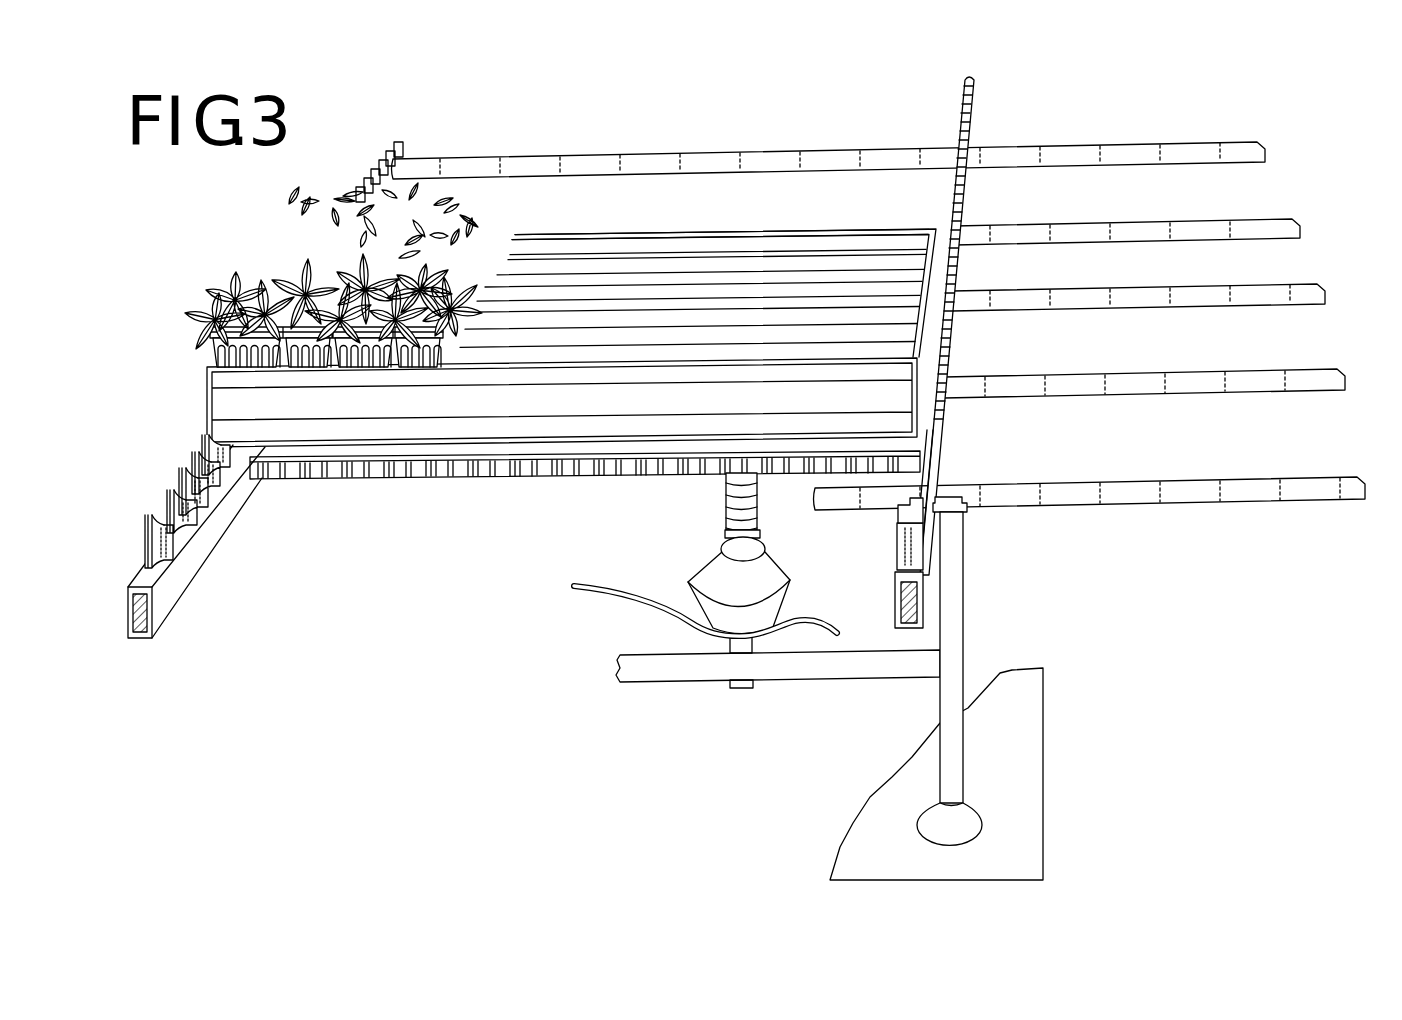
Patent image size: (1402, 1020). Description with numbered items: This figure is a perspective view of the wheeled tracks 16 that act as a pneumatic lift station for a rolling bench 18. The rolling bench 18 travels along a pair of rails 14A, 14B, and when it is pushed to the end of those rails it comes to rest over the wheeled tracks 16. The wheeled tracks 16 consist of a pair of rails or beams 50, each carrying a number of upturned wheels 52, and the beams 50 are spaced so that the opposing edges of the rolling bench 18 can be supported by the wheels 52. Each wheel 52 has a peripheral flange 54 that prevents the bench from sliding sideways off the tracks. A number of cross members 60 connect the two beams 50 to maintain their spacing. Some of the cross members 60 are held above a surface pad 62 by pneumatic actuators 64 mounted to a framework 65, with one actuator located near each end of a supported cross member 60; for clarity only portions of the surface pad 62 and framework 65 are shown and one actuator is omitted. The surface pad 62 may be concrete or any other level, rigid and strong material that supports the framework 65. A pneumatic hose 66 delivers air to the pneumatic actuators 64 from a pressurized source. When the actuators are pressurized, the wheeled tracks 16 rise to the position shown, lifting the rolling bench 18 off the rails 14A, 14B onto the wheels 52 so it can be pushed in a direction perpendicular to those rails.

The rail 14A is at (1270, 290).
The rail 14B is at (1283, 377).
The wheeled tracks 16 is at (876, 117).
The rolling bench 18 is at (207, 402).
The beam 50 is at (158, 630).
The upturned wheel 52 is at (167, 543).
The peripheral flange 54 is at (145, 521).
The cross member 60 is at (498, 476).
The surface pad 62 is at (1043, 702).
The pneumatic actuator 64 is at (705, 572).
The framework 65 is at (965, 601).
The pneumatic hose 66 is at (613, 603).